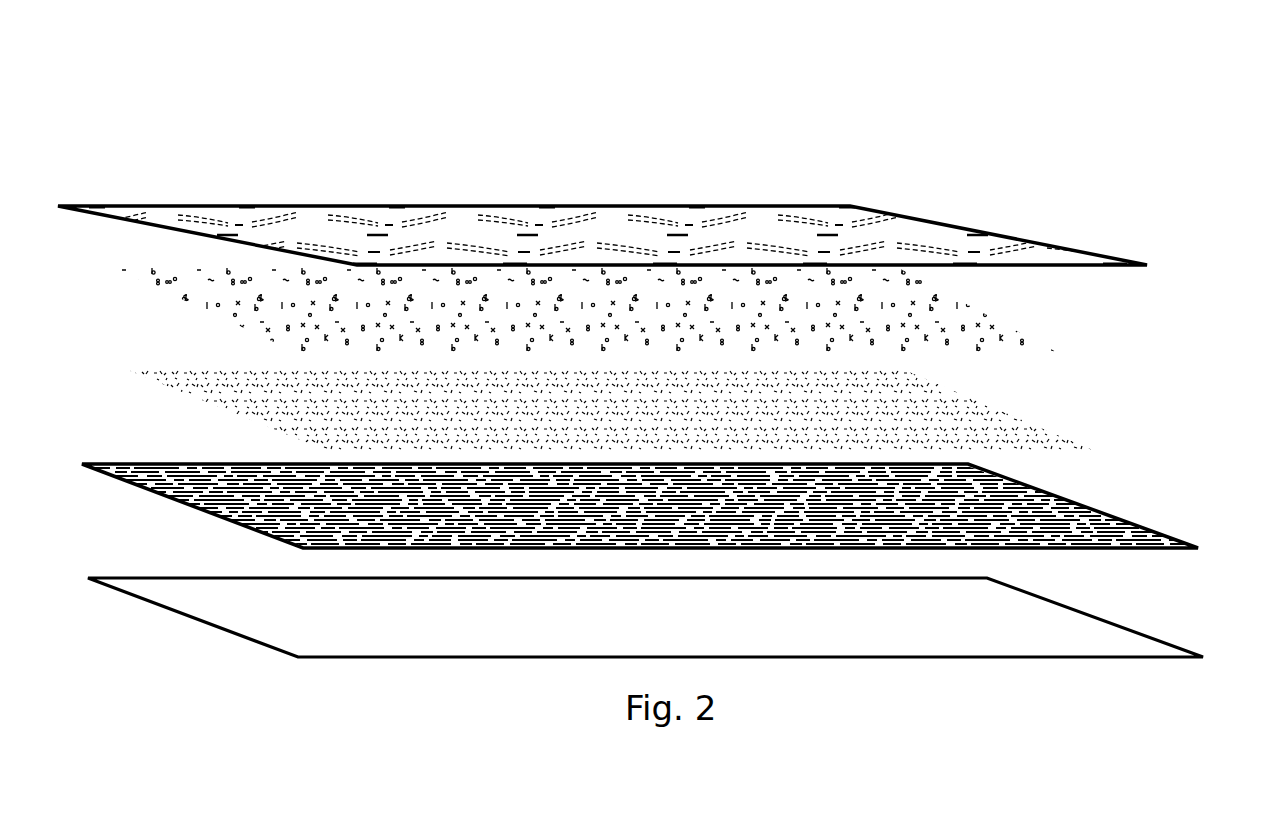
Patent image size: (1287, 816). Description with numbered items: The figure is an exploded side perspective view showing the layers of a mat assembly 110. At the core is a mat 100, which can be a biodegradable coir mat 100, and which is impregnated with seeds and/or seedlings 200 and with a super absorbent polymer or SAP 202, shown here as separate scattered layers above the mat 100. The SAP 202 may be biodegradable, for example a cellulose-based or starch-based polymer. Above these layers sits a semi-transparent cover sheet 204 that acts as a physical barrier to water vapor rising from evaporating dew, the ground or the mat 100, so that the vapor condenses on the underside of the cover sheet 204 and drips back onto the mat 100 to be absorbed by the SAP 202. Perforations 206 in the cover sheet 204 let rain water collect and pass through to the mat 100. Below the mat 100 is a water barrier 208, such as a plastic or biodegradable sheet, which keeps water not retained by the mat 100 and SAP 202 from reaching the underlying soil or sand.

The mat assembly 110 is at (966, 152).
The cover sheet 204 is at (599, 182).
The perforations 206 is at (688, 226).
The seeds and/or seedlings 200 is at (1050, 347).
The super absorbent polymer (SAP) 202 is at (1048, 432).
The mat 100 is at (1107, 507).
The water barrier 208 is at (1153, 638).